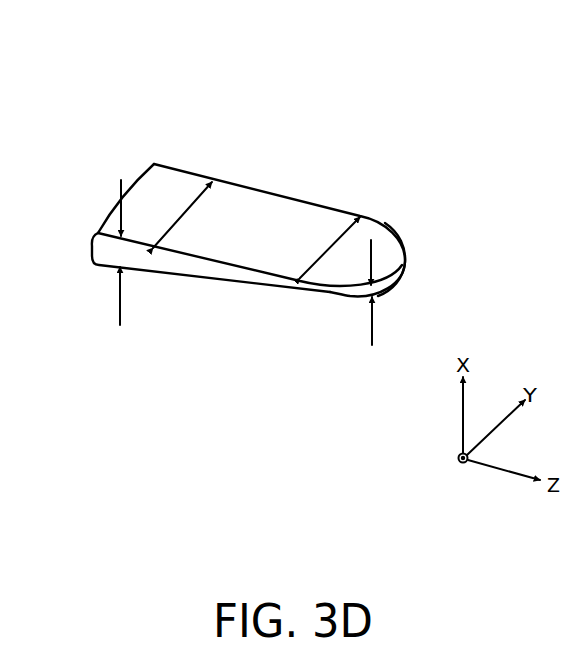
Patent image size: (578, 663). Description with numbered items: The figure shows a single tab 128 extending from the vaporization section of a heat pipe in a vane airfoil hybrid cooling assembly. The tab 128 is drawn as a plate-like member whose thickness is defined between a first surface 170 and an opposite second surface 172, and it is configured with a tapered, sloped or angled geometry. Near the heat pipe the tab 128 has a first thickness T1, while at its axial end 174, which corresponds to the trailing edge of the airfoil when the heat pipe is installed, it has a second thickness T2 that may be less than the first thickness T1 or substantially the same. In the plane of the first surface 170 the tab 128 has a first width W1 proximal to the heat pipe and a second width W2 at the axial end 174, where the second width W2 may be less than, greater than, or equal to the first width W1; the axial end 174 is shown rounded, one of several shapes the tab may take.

The tab 128 is at (297, 195).
The first surface 170 is at (258, 244).
The second surface 172 is at (223, 284).
The axial end 174 is at (405, 270).
The first width W1 is at (190, 203).
The second width W2 is at (334, 243).
The first thickness T1 is at (104, 262).
The second thickness T2 is at (355, 297).